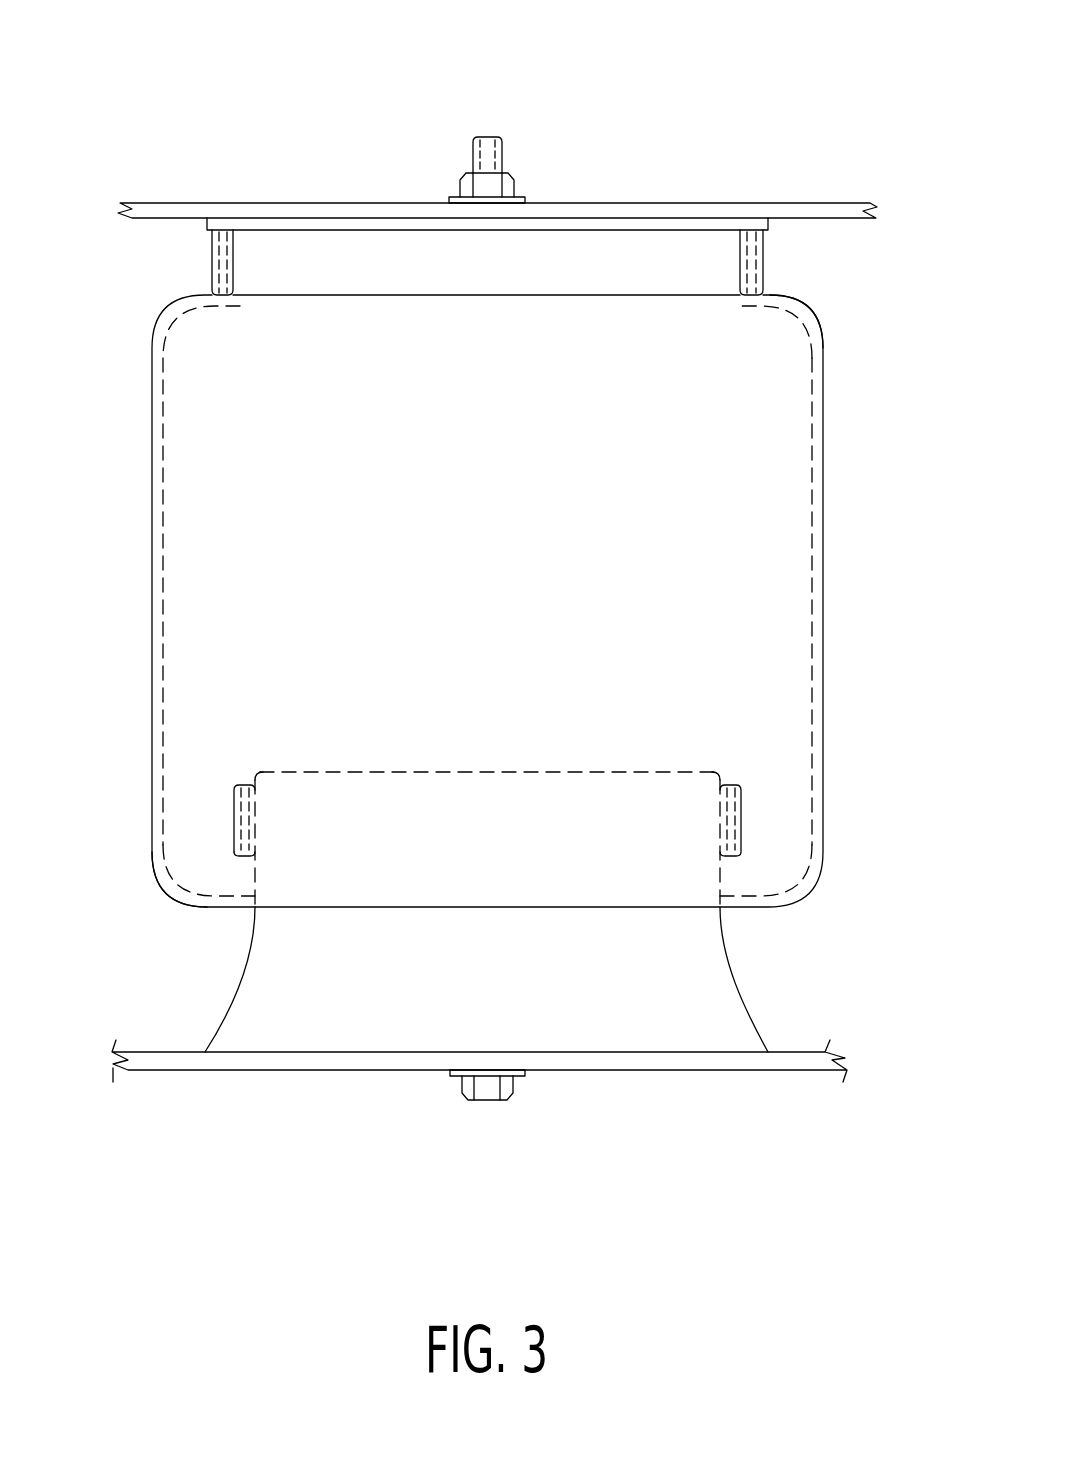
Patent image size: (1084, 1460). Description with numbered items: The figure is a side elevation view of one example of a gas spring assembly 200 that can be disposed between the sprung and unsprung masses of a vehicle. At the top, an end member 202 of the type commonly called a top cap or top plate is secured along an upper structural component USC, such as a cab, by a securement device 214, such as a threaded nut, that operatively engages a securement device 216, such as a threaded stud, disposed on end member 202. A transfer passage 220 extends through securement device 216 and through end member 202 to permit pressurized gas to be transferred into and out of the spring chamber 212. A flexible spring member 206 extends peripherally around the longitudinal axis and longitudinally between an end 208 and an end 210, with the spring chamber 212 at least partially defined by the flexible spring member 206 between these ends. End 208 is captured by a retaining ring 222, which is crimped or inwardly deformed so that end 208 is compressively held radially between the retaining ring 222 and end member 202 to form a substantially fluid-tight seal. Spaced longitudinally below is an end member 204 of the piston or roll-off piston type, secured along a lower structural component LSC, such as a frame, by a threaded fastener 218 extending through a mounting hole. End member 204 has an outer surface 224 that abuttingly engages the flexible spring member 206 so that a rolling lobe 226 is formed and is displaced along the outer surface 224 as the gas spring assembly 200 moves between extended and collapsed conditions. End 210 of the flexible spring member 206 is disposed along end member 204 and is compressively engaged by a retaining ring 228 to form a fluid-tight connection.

The gas spring assembly 200 is at (865, 253).
The end member 202 is at (680, 203).
The end member 204 is at (745, 980).
The flexible spring member 206 is at (823, 425).
The end 208 is at (825, 300).
The end 210 is at (748, 860).
The spring chamber 212 is at (693, 510).
The securement device 214 is at (515, 187).
The securement device 216 is at (505, 150).
The threaded fastener 218 is at (466, 1088).
The transfer passage 220 is at (488, 137).
The retaining ring 222 is at (215, 262).
The outer surface 224 is at (240, 975).
The rolling lobe 226 is at (205, 910).
The retaining ring 228 is at (236, 805).
The upper structural component USC is at (808, 203).
The lower structural component LSC is at (302, 1070).